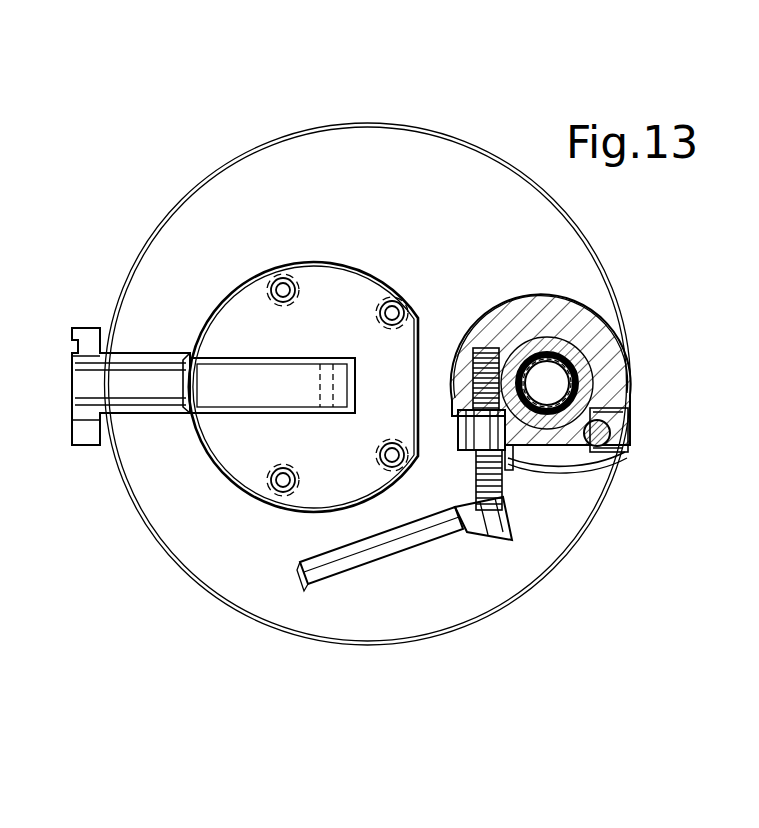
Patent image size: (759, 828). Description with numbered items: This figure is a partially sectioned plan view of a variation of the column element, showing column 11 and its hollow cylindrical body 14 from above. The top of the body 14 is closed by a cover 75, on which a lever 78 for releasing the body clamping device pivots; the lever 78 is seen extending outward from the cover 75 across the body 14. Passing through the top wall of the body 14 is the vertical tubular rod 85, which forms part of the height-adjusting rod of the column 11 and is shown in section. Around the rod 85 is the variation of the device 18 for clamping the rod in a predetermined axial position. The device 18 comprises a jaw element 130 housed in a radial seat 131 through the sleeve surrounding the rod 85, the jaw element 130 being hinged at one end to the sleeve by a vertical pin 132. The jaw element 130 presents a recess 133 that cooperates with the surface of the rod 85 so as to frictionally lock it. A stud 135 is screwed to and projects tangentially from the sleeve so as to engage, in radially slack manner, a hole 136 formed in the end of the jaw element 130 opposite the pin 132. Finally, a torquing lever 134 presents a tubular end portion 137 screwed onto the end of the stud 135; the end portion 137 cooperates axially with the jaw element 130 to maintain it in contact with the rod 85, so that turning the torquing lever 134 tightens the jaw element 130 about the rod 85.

The column 11 is at (243, 134).
The hollow cylindrical body 14 is at (446, 124).
The device for clamping rod 18 is at (529, 492).
The cover 75 is at (232, 332).
The lever 78 is at (150, 385).
The vertical tubular rod 85 is at (562, 300).
The jaw element 130 is at (570, 460).
The radial seat 131 is at (623, 432).
The vertical pin 132 is at (622, 440).
The recess 133 is at (590, 363).
The torquing lever 134 is at (447, 533).
The stud 135 is at (510, 527).
The hole 136 is at (462, 445).
The tubular end portion 137 is at (545, 470).